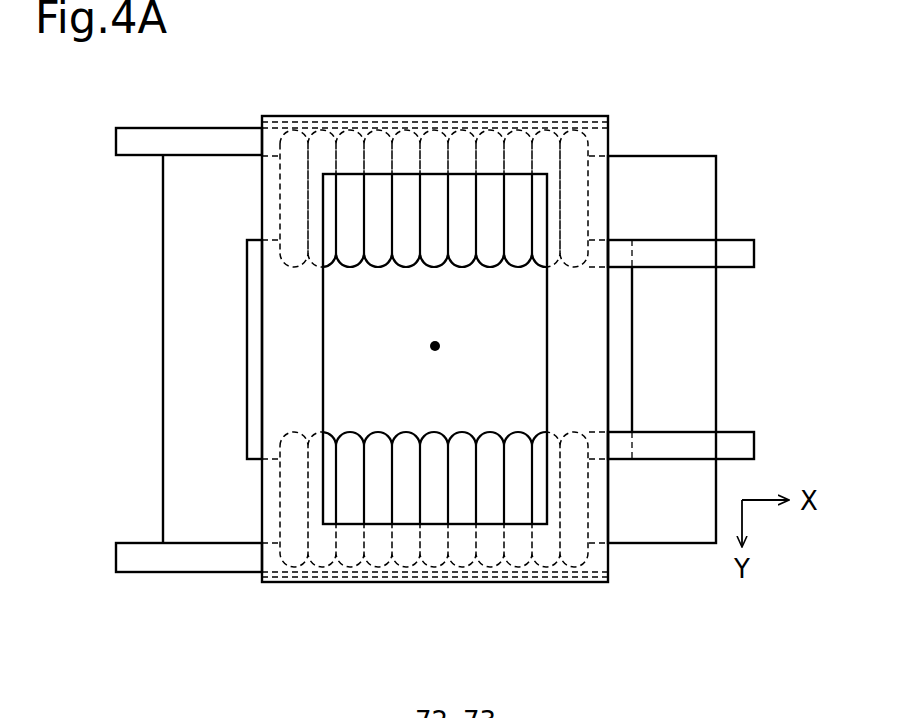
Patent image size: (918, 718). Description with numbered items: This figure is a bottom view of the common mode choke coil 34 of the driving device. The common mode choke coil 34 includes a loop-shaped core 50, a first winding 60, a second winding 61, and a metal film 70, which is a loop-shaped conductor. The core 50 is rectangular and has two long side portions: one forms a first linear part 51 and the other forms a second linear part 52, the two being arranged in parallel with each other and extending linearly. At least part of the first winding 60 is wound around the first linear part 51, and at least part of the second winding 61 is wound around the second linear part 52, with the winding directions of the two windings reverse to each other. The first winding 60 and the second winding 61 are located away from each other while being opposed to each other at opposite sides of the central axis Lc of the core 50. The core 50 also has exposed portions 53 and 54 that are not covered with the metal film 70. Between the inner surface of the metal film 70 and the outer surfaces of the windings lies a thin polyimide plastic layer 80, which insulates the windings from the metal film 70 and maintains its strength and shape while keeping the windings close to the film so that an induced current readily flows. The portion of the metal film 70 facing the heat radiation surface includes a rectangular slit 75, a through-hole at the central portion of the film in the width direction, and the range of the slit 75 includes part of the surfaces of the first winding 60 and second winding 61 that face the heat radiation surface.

The common mode choke coil 34 is at (439, 319).
The core 50 is at (715, 396).
The first linear part 51 is at (618, 459).
The second linear part 52 is at (620, 240).
The exposed portion 53 is at (182, 350).
The exposed portion 54 is at (705, 348).
The first winding 60 is at (280, 503).
The second winding 61 is at (280, 198).
The metal film 70 is at (590, 583).
The slit 75 is at (323, 289).
The plastic layer 80 is at (608, 554).
The central axis Lc is at (440, 344).